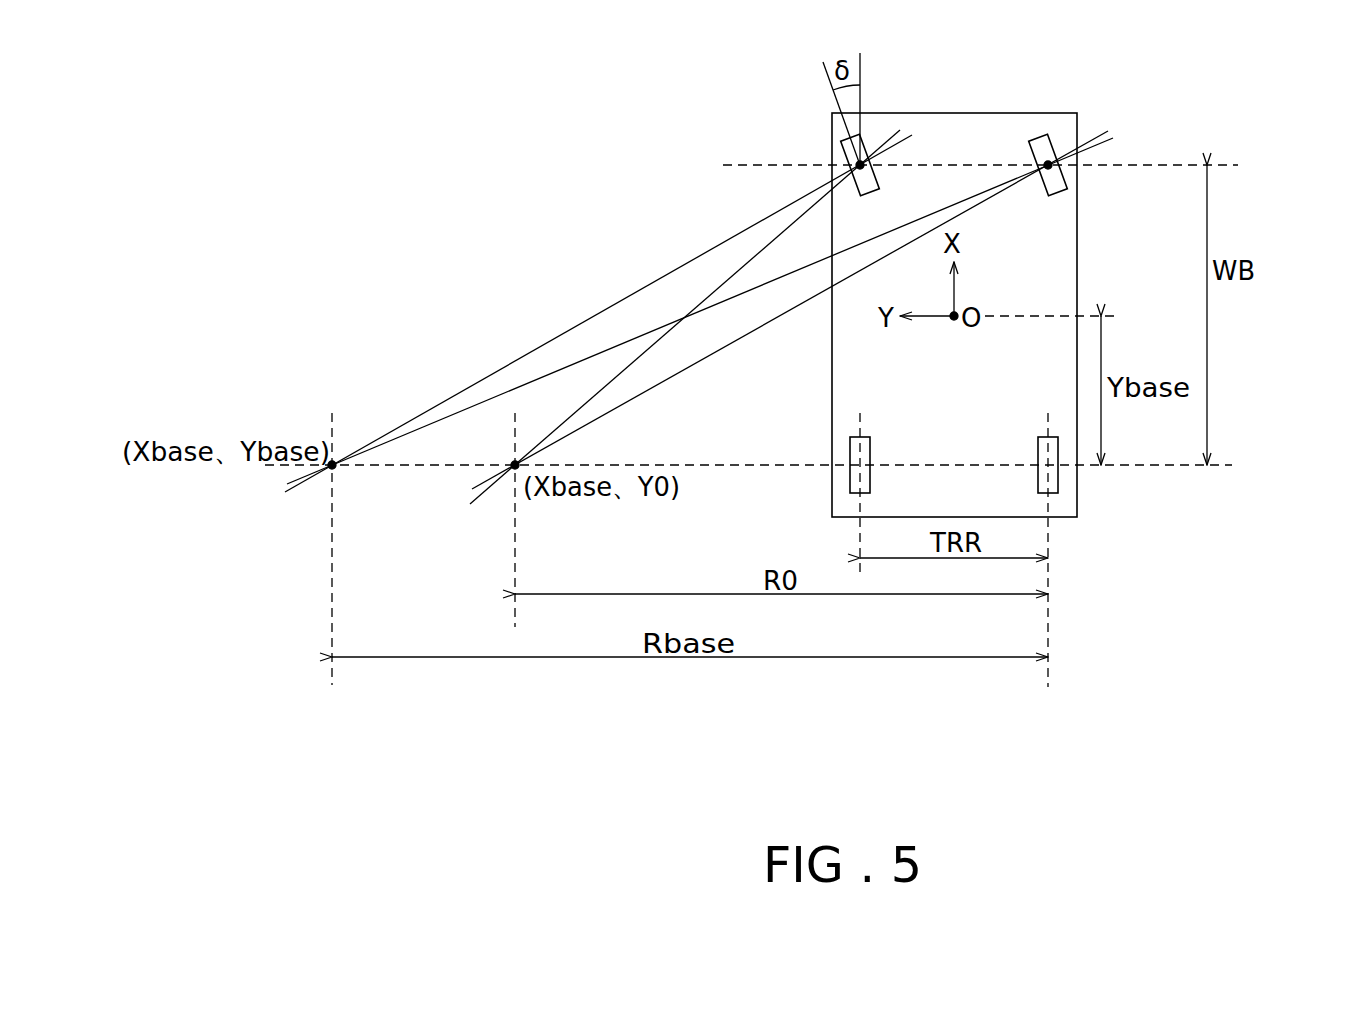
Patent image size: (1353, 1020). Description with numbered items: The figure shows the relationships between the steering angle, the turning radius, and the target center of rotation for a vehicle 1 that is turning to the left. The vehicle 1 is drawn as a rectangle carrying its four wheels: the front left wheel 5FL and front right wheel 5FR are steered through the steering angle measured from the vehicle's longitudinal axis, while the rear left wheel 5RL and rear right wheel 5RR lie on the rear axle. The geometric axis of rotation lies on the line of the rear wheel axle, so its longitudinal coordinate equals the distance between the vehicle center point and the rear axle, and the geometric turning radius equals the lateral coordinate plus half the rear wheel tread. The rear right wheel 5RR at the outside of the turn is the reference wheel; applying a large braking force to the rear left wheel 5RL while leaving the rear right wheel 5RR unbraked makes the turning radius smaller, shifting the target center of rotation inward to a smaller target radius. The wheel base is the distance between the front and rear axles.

The vehicle 1 is at (960, 113).
The front left wheel 5FL is at (846, 155).
The front right wheel 5FR is at (1053, 148).
The rear left wheel 5RL is at (850, 452).
The rear right wheel 5RR is at (1058, 487).